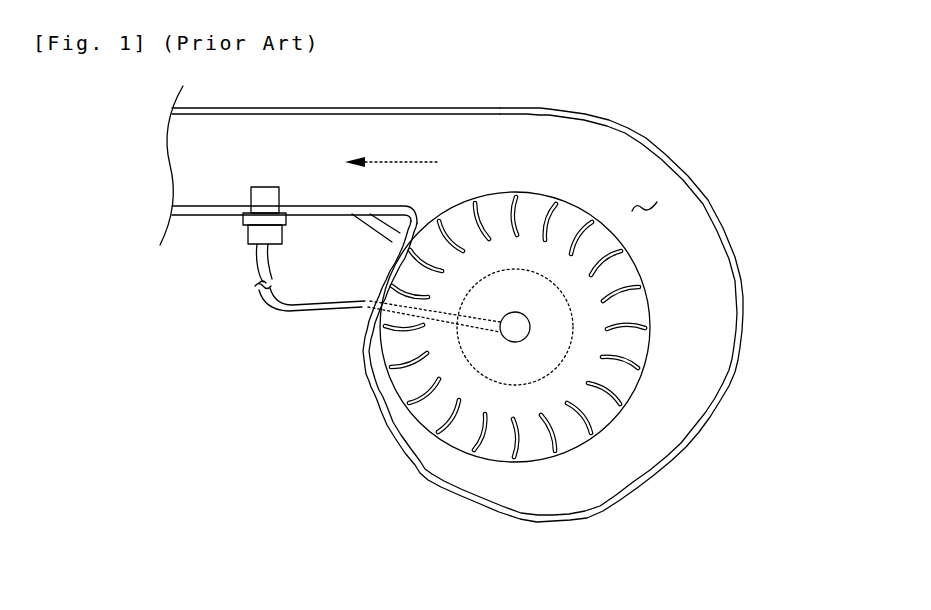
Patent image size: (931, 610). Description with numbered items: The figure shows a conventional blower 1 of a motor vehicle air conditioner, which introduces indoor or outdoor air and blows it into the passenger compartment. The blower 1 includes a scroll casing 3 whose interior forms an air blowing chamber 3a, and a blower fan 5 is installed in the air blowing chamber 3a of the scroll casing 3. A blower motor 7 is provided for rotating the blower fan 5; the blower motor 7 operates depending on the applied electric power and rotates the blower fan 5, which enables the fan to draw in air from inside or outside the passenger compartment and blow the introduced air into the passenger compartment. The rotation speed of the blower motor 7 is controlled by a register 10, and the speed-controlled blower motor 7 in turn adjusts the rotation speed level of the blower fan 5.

The blower 1 is at (435, 335).
The scroll casing 3 is at (707, 197).
The air blowing chamber 3a is at (647, 204).
The blower fan 5 is at (567, 433).
The blower motor 7 is at (487, 378).
The register 10 is at (248, 235).